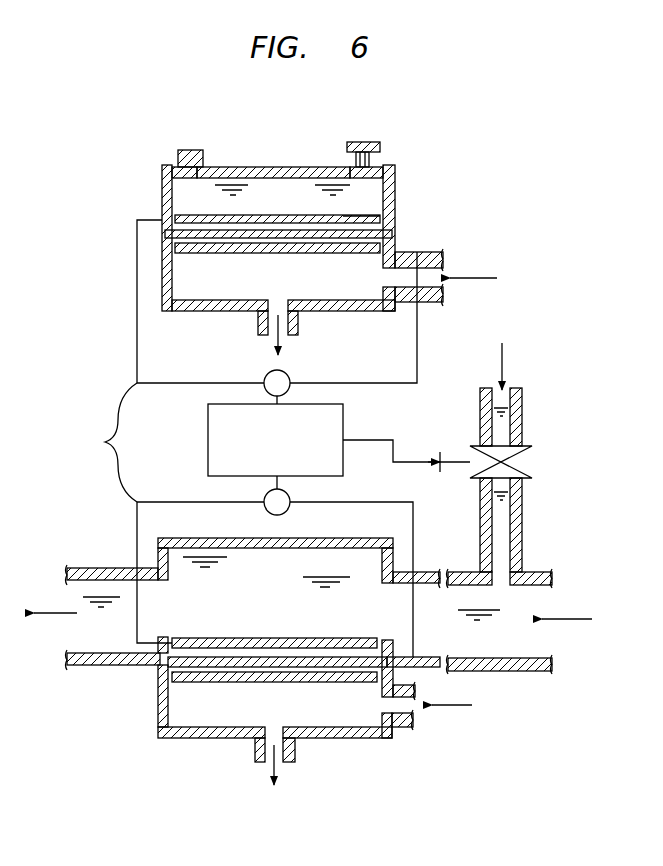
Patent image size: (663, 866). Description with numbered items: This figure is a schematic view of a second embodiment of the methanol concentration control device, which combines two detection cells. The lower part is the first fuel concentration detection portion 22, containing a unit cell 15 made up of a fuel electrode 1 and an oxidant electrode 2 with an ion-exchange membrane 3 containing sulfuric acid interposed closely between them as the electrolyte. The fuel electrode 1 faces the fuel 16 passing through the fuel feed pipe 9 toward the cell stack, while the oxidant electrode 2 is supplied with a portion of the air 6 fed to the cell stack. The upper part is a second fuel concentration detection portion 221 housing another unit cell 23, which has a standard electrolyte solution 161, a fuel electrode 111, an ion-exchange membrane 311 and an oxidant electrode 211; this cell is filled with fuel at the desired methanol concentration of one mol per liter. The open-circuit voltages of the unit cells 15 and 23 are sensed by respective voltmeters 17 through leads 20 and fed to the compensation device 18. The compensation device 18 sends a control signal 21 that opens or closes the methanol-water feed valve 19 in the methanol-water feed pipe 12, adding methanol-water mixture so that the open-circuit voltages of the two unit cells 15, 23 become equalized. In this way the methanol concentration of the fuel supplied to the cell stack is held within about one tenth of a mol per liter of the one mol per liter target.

The fuel electrode 1 is at (268, 638).
The oxidant electrode 2 is at (275, 682).
The ion-exchange membrane 3 is at (317, 657).
The air 6 is at (464, 505).
The fuel feed pipe 9 is at (108, 667).
The methanol-water feed pipe 12 is at (523, 530).
The unit cell 15 is at (217, 684).
The fuel 16 is at (313, 630).
The voltmeter 17 is at (289, 374).
The compensation device 18 is at (208, 440).
The methanol-water feed valve 19 is at (527, 445).
The lead 20 is at (257, 438).
The control signal line 21 is at (384, 440).
The fuel concentration detection portion 22 is at (367, 740).
The unit cell 23 is at (376, 199).
The fuel electrode 111 is at (253, 215).
The standard electrolyte solution 161 is at (240, 182).
The oxidant electrode 211 is at (280, 253).
The second fuel concentration detection portion 221 is at (162, 280).
The ion-exchange membrane 311 is at (390, 235).